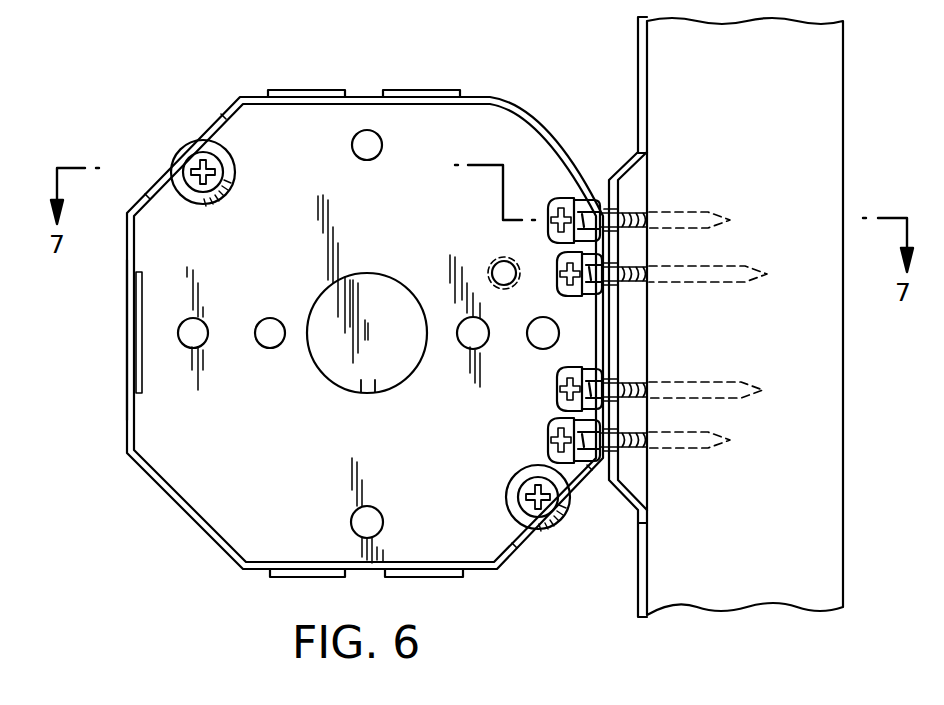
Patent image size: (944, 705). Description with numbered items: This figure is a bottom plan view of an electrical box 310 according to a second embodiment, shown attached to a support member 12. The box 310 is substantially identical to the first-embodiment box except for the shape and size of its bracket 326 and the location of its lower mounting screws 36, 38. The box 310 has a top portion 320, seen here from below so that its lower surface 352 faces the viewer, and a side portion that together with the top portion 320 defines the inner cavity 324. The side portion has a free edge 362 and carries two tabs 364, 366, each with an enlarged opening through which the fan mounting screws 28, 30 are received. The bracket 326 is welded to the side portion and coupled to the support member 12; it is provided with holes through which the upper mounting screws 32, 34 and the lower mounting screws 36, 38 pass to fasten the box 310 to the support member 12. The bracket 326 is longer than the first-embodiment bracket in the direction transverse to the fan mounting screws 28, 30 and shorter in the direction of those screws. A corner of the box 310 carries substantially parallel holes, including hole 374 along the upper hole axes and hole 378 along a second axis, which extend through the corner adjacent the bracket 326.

The electrical box 310 is at (185, 88).
The support member 12 is at (762, 64).
The fan mounting screw 28 is at (180, 165).
The fan mounting screw 30 is at (510, 500).
The upper mounting screw 32 is at (552, 200).
The upper mounting screw 34 is at (550, 433).
The lower mounting screw 36 is at (557, 280).
The lower mounting screw 38 is at (558, 386).
The top portion 320 is at (177, 414).
The inner cavity 324 is at (200, 478).
The bracket 326 is at (640, 103).
The lower surface 352 is at (402, 205).
The free edge 362 is at (222, 556).
The tab 364 is at (198, 205).
The tab 366 is at (510, 527).
The hole 374 is at (607, 476).
The hole 378 is at (613, 374).